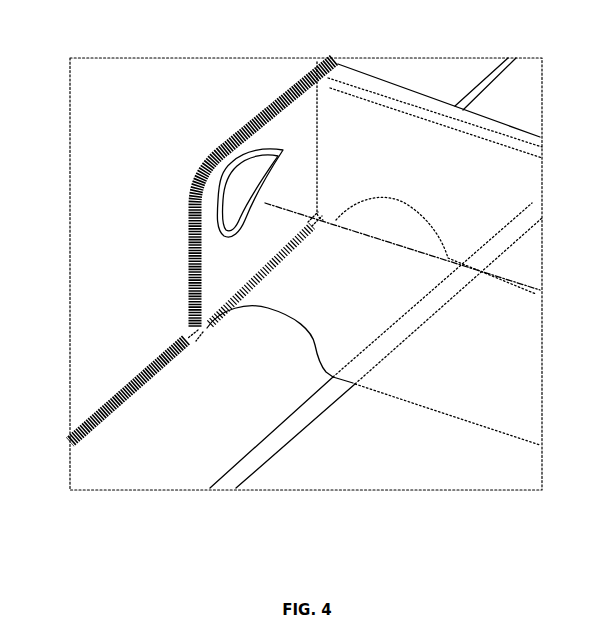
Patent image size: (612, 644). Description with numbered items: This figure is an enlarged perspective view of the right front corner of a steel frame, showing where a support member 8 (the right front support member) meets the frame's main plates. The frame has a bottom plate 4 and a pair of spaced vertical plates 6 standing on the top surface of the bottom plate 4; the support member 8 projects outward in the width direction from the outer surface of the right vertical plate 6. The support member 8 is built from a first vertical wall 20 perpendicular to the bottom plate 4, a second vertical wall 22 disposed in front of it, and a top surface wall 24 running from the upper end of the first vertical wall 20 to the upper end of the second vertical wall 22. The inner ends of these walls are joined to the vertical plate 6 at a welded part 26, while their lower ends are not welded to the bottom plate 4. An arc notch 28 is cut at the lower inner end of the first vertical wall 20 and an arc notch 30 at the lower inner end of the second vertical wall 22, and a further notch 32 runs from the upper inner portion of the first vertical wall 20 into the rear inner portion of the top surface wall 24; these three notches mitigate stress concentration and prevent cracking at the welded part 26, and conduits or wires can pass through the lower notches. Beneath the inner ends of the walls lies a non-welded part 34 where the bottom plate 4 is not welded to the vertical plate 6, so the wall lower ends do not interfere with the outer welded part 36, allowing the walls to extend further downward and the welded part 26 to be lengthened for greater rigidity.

The bottom plate 4 is at (227, 448).
The vertical plate 6 is at (85, 237).
The support member 8 is at (400, 128).
The first vertical wall 20 is at (508, 370).
The second vertical wall 22 is at (366, 116).
The top surface wall 24 is at (487, 215).
The welded part 26 is at (262, 113).
The arc notch 28 is at (279, 316).
The arc notch 30 is at (413, 212).
The notch 32 is at (240, 156).
The non-welded part 34 is at (195, 338).
The welded part 36 is at (220, 300).